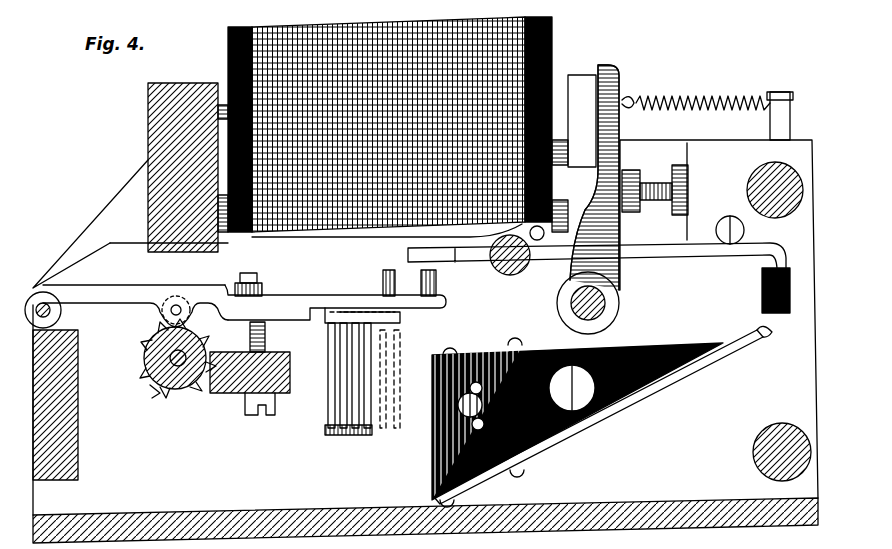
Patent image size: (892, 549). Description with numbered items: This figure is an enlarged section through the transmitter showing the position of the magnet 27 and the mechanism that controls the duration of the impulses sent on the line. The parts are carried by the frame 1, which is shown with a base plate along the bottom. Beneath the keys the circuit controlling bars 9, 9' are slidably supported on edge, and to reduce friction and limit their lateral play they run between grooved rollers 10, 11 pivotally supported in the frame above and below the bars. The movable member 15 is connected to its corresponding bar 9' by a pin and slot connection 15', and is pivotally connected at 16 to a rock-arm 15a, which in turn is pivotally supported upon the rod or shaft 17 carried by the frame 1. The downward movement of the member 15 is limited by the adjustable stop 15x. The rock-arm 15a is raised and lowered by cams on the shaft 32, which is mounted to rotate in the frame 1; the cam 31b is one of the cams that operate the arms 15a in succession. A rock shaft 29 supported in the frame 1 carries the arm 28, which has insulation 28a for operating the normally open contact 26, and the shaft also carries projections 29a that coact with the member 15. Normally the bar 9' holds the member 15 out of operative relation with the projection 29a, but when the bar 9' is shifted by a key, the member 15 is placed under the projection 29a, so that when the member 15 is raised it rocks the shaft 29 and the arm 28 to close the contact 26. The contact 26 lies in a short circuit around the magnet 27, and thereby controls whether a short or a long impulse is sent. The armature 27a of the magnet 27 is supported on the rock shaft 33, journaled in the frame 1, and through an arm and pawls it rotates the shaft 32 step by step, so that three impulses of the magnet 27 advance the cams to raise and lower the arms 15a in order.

The frame 1 is at (266, 512).
The magnet 27 is at (390, 116).
The armature 27a is at (578, 74).
The rod or shaft 17 is at (35, 285).
The rock-arm 15a is at (115, 287).
The movable member 15 is at (335, 288).
The pivotal connection 16 is at (252, 272).
The pin and slot connection 15' is at (401, 271).
The adjustable stop 15x is at (266, 336).
The shaft 32 is at (180, 393).
The cam 31b is at (150, 390).
The grooved roller 10 is at (338, 310).
The circuit controlling bar 9' is at (329, 381).
The grooved roller 11 is at (345, 436).
The circuit controlling bar 9 is at (391, 394).
The arm 28 is at (686, 258).
The insulation 28a is at (762, 275).
The rock shaft 29 is at (537, 270).
The projection 29a is at (500, 270).
The rock shaft 33 is at (606, 305).
The contact 26 is at (755, 330).